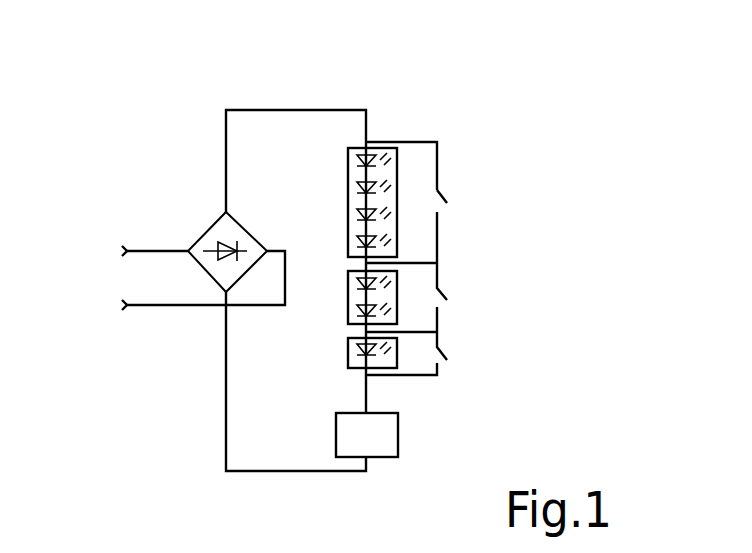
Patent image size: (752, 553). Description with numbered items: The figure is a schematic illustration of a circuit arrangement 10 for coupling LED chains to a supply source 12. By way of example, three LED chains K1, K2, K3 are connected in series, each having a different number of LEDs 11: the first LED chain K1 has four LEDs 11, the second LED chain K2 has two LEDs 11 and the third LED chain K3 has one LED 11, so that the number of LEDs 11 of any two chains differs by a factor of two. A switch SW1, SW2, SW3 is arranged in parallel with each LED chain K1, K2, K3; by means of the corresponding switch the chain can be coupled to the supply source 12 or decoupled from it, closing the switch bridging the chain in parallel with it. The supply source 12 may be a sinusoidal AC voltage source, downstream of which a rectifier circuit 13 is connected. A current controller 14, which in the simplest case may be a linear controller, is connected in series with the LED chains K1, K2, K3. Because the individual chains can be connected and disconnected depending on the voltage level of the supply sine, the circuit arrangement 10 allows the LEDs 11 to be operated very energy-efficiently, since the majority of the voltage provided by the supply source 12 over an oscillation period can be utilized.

The circuit arrangement 10 is at (498, 95).
The LED 11 is at (360, 220).
The supply source 12 is at (185, 278).
The rectifier circuit 13 is at (212, 237).
The current controller 14 is at (387, 437).
The first LED chain K1 is at (347, 166).
The second LED chain K2 is at (347, 315).
The third LED chain K3 is at (347, 360).
The switch SW1 is at (463, 343).
The switch SW2 is at (463, 297).
The switch SW3 is at (463, 219).